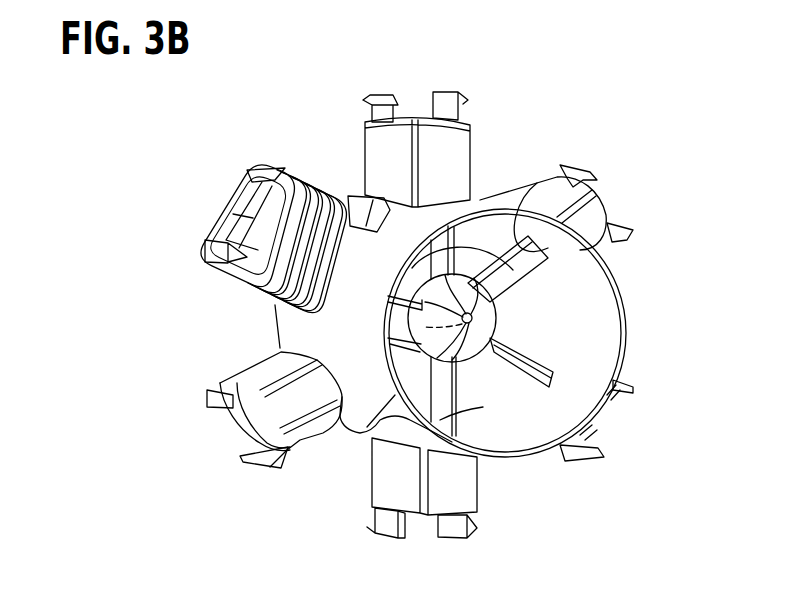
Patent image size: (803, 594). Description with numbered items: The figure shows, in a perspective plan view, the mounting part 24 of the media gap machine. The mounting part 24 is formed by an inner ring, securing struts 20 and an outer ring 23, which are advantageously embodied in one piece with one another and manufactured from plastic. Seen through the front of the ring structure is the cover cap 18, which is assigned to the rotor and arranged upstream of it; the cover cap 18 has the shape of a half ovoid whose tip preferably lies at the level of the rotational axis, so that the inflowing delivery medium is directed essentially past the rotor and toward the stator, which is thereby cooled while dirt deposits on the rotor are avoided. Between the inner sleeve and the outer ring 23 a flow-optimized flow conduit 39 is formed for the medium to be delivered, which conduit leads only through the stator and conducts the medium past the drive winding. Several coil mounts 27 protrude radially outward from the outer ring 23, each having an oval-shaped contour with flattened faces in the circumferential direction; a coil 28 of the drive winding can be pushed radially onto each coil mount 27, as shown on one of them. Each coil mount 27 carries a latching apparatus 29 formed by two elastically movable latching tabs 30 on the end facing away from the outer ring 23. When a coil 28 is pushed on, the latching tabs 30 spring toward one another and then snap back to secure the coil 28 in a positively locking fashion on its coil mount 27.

The cover cap 18 is at (482, 316).
The securing struts 20 is at (521, 188).
The outer ring 23 is at (360, 437).
The mounting part 24 is at (488, 192).
The coil mount 27 is at (418, 106).
The coil 28 is at (313, 183).
The latching apparatus 29 is at (238, 468).
The latching tabs 30 is at (262, 160).
The flow conduit 39 is at (503, 413).